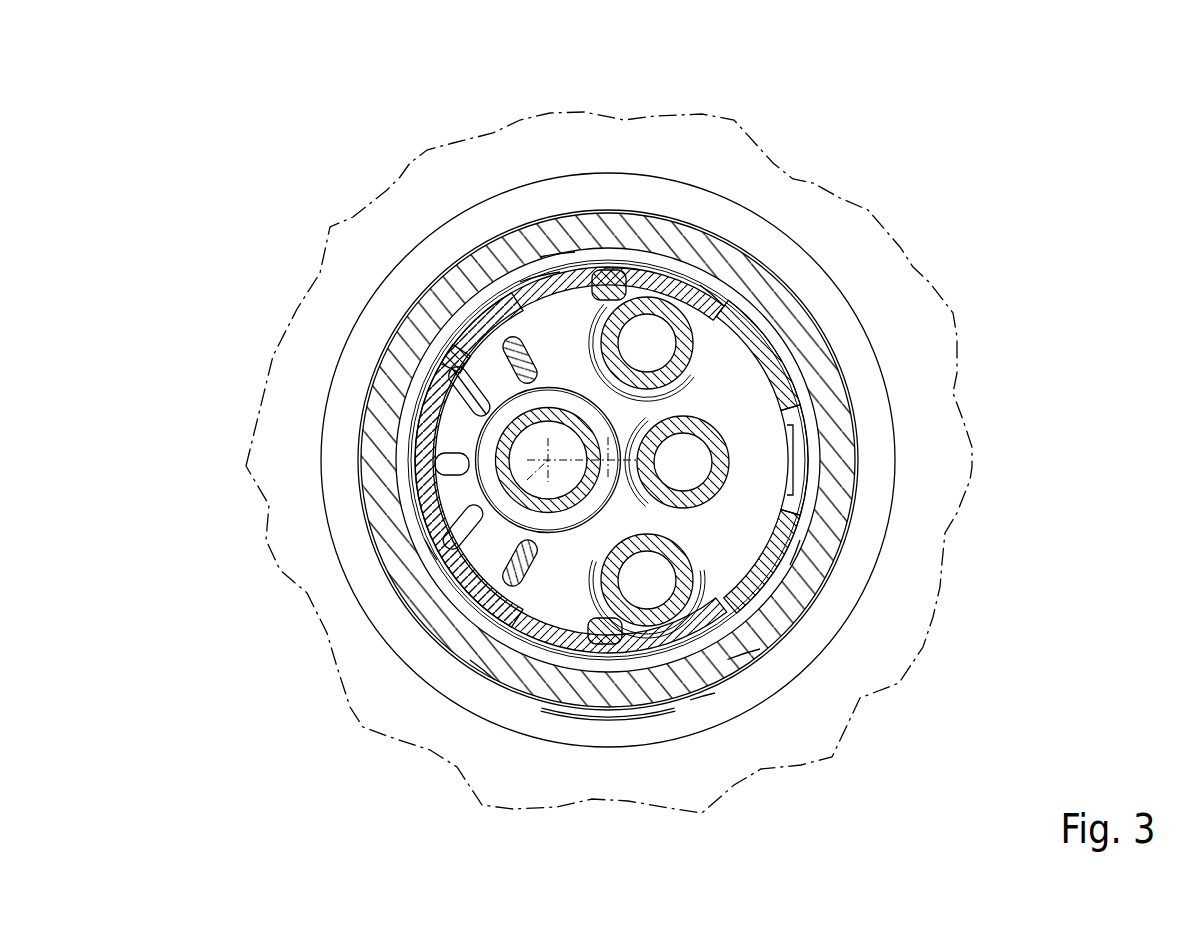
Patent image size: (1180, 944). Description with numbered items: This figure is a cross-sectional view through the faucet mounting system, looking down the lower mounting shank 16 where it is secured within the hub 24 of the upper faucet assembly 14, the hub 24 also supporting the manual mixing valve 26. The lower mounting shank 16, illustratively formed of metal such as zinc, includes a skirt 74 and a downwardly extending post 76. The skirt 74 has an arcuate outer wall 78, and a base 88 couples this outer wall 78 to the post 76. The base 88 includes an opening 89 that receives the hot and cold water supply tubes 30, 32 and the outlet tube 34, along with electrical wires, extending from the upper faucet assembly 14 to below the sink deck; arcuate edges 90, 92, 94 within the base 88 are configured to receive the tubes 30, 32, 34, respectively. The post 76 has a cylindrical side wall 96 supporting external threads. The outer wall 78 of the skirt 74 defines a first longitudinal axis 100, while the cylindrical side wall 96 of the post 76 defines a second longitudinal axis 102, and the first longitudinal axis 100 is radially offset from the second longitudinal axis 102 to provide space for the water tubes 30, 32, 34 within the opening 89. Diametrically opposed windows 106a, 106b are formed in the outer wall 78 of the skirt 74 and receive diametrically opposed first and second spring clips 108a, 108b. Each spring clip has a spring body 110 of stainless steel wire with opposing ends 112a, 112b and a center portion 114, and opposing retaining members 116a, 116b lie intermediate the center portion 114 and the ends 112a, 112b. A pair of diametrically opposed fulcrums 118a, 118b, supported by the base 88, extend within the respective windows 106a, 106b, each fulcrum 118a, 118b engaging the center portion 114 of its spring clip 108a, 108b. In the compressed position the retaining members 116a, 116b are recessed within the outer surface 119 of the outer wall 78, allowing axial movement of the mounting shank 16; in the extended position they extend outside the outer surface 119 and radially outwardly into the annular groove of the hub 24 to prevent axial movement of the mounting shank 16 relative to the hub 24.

The upper faucet assembly 14 is at (721, 188).
The lower mounting shank 16 is at (438, 542).
The hub 24 is at (885, 372).
The mixing valve 26 is at (417, 345).
The hot water supply tube 30 is at (728, 640).
The cold water supply tube 32 is at (785, 450).
The outlet tube 34 is at (662, 298).
The skirt 74 is at (430, 433).
The post 76 is at (430, 567).
The outer wall 78 is at (450, 372).
The base 88 is at (580, 630).
The opening 89 is at (702, 378).
The arcuate edge 90 is at (562, 632).
The arcuate edge 92 is at (780, 540).
The arcuate edge 94 is at (557, 257).
The cylindrical side wall 96 is at (430, 485).
The first longitudinal axis 100 is at (541, 712).
The second longitudinal axis 102 is at (492, 612).
The window 106a is at (469, 336).
The window 106b is at (756, 592).
The first spring clip 108a is at (636, 262).
The second spring clip 108b is at (640, 645).
The spring body 110 is at (543, 282).
The end 112a is at (463, 368).
The end 112b is at (790, 396).
The center portion 114 is at (622, 270).
The retaining member 116a is at (492, 305).
The retaining member 116b is at (726, 272).
The fulcrum 118a is at (607, 268).
The fulcrum 118b is at (605, 630).
The outer surface 119 is at (437, 463).